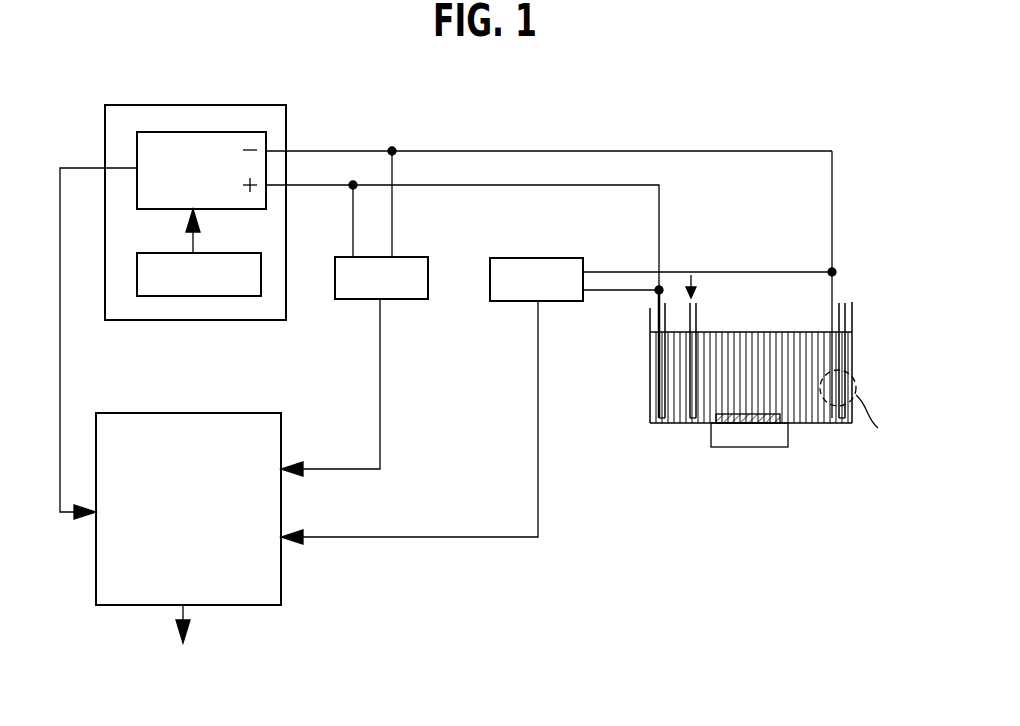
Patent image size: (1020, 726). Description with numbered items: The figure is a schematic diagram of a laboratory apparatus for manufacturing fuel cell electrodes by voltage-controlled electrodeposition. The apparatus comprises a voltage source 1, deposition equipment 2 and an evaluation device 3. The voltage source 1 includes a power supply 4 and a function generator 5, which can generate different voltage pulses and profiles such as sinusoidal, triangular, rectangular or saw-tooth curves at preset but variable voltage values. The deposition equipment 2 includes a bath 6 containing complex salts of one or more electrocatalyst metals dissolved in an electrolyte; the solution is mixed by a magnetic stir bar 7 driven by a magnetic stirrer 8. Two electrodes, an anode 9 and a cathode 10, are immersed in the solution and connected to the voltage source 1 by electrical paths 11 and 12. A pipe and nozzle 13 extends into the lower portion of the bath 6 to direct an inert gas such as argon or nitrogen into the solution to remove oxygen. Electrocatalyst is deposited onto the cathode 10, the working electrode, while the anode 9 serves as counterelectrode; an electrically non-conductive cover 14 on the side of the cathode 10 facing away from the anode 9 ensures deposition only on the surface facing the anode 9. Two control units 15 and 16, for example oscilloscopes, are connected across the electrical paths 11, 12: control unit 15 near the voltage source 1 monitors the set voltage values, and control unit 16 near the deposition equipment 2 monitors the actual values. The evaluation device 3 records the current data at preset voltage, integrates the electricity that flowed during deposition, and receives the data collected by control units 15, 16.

The voltage source 1 is at (236, 66).
The deposition equipment 2 is at (626, 446).
The evaluation device 3 is at (181, 519).
The power supply 4 is at (195, 181).
The function generator 5 is at (192, 287).
The bath 6 is at (677, 427).
The magnetic stir bar 7 is at (777, 425).
The magnetic stirrer 8 is at (763, 449).
The anode 9 is at (655, 343).
The cathode 10 is at (857, 355).
The electrical path 11 is at (502, 185).
The electrical path 12 is at (782, 152).
The pipe and nozzle 13 is at (700, 318).
The cover 14 is at (853, 317).
The control unit 15 is at (369, 289).
The control unit 16 is at (524, 290).